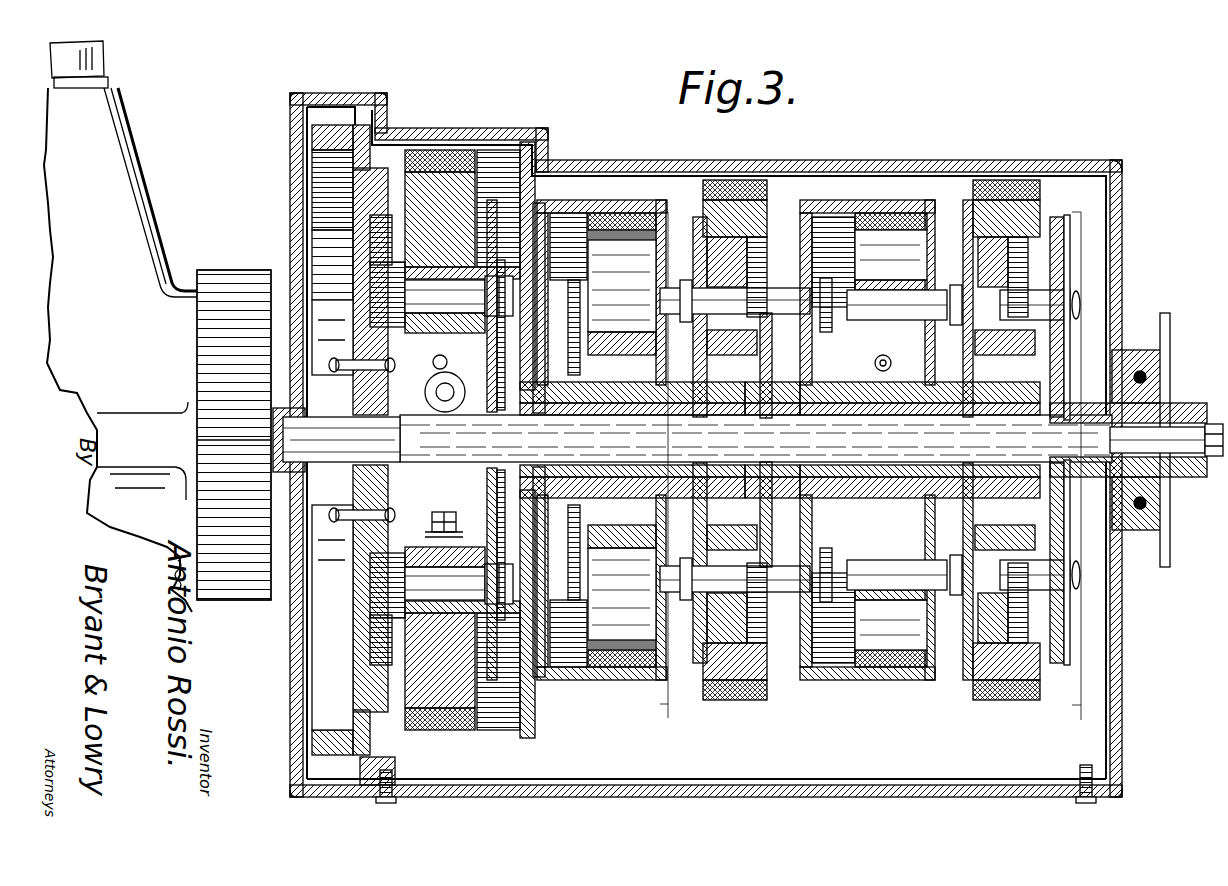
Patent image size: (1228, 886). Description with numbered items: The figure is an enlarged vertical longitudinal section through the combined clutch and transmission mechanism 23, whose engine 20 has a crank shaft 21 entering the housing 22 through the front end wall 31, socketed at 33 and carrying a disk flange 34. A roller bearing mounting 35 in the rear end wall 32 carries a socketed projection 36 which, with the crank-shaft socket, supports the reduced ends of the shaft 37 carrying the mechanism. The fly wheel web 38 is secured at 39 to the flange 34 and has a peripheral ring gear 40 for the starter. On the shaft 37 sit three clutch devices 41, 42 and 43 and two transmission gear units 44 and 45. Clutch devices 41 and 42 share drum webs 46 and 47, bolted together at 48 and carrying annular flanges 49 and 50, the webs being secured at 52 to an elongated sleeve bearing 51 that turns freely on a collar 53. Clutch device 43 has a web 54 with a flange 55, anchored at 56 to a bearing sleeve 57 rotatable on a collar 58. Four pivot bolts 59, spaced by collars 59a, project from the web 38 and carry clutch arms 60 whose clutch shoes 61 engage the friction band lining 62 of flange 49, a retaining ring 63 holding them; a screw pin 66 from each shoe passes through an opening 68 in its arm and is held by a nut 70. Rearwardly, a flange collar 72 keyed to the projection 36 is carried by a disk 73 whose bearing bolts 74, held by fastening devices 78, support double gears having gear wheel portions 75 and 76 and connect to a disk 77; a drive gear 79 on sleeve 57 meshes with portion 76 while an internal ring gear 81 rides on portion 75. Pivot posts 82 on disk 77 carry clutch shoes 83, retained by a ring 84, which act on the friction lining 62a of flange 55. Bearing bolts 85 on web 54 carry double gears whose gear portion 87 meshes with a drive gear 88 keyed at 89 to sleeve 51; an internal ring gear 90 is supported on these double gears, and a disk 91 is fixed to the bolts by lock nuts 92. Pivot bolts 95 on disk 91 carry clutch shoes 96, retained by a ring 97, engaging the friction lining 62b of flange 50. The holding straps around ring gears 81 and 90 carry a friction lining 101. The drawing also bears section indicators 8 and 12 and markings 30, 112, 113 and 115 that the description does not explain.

The section line 8- 8 is at (666, 458).
The section line 12- 12 is at (1092, 466).
The motor 20 is at (115, 165).
The crank shaft 21 is at (290, 470).
The housing 22 is at (938, 165).
The combined clutch and transmission mechanism 23 is at (907, 175).
The main shaft portion 30 is at (990, 418).
The front end wall 31 is at (292, 222).
The rear end wall 32 is at (1125, 272).
The socket 33 is at (290, 410).
The disk flange 34 is at (340, 360).
The roller bearing mounting 35 is at (1130, 545).
The socketed projection 36 is at (1088, 500).
The shaft 37 is at (790, 433).
The web portion 38 is at (335, 243).
The securing means 39 is at (381, 440).
The ring gear 40 is at (318, 115).
The clutch device 41 is at (545, 135).
The clutch device 42 is at (577, 184).
The clutch device 43 is at (845, 193).
The transmission gear unit 44 is at (813, 200).
The transmission gear unit 45 is at (967, 210).
The radial web 46 is at (522, 518).
The radial web 47 is at (560, 530).
The bolt 48 is at (507, 530).
The annular flange 49 is at (495, 160).
The annular flange 50 is at (620, 215).
The sleeve bearing 51 is at (605, 395).
The securing point 52 is at (535, 388).
The collar 53 is at (756, 438).
The web 54 is at (803, 270).
The annular flange 55 is at (858, 210).
The anchoring point 56 is at (800, 388).
The bearing sleeve 57 is at (878, 380).
The collar 58 is at (920, 440).
The pivot bolt 59 is at (455, 325).
The collar 59a is at (370, 270).
The clutch arm 60 is at (432, 525).
The clutch shoe 61 is at (422, 190).
The friction band lining 62 is at (470, 732).
The friction lining 62a is at (905, 235).
The friction lining 62b is at (575, 665).
The retaining ring 63 is at (495, 610).
The screw pin 66 is at (722, 690).
The opening 68 is at (435, 358).
The nut 70 is at (445, 518).
The flange collar 72 is at (1112, 395).
The disk 73 is at (1068, 240).
The bearing bolt 74 is at (1068, 275).
The gear wheel portion 75 is at (1022, 215).
The gear wheel portion 76 is at (1012, 300).
The disk 77 is at (963, 265).
The fastening device 78 is at (957, 287).
The drive gear 79 is at (965, 378).
The internal ring gear 81 is at (1055, 215).
The pivot post 82 is at (905, 590).
The clutch shoe 83 is at (845, 665).
The ring 84 is at (830, 600).
The bearing bolt 85 is at (788, 600).
The gear portion 87 is at (748, 680).
The drive gear 88 is at (782, 517).
The key 89 is at (784, 492).
The internal ring gear 90 is at (727, 212).
The disk 91 is at (705, 362).
The lock nut 92 is at (697, 278).
The pivot bolt 95 is at (662, 300).
The clutch shoe 96 is at (590, 632).
The ring 97 is at (585, 605).
The friction lining 101 is at (770, 200).
The ball 112 is at (1168, 515).
The shaft end 113 is at (1170, 400).
The nut 115 is at (1205, 380).